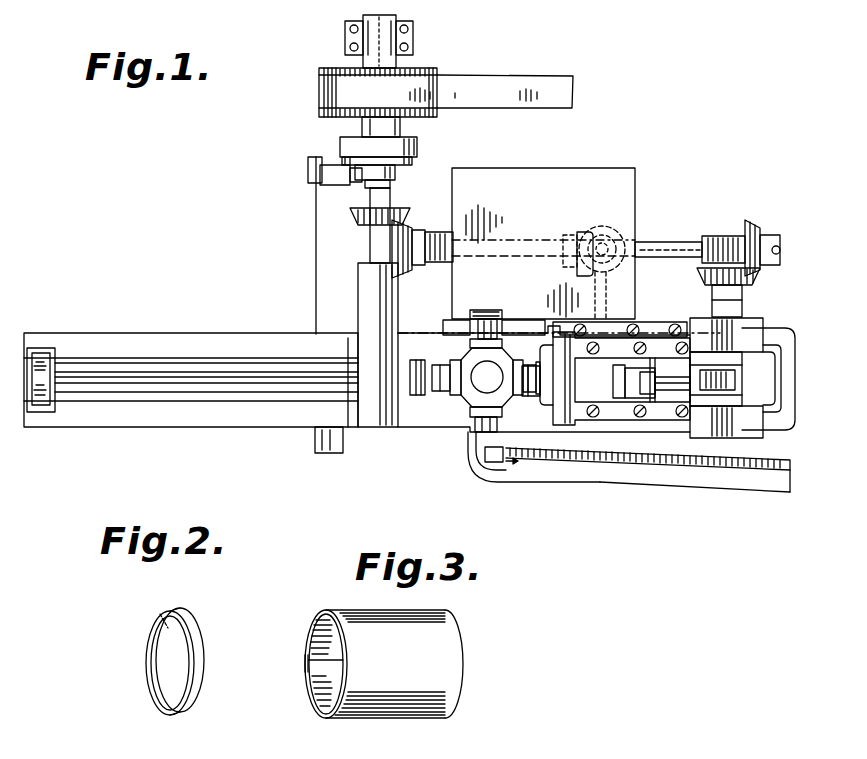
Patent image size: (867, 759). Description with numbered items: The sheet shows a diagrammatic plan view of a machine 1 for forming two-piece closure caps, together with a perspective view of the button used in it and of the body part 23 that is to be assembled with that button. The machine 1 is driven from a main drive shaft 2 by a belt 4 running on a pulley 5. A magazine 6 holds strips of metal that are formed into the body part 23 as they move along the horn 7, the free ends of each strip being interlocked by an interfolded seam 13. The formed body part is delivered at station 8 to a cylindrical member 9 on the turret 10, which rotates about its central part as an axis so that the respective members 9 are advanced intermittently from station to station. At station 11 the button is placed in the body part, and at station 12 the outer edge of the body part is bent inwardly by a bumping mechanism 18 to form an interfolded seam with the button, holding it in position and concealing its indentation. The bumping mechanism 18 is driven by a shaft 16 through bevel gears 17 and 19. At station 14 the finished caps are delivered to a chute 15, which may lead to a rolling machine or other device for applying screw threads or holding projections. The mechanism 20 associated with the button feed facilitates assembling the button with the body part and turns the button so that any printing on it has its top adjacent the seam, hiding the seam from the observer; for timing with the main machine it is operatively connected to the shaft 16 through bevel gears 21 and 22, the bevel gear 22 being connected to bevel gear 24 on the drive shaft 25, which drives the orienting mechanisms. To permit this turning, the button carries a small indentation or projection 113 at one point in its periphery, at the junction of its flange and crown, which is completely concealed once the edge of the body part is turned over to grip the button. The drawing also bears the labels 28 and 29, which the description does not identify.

In FIG. 1, the machine 1 is at (362, 456).
In FIG. 1, the main drive shaft 2 is at (363, 18).
In FIG. 1, the belt 4 is at (470, 77).
In FIG. 1, the pulley 5 is at (431, 68).
In FIG. 1, the magazine 6 is at (42, 346).
In FIG. 1, the horn 7 is at (231, 383).
In FIG. 1, the station 8 is at (420, 394).
In FIG. 1, the cylindrical member 9 is at (441, 392).
In FIG. 1, the turret 10 is at (500, 395).
In FIG. 1, the station 11 is at (496, 334).
In FIG. 1, the station 12 is at (562, 427).
In FIG. 3, the interfolded seam 13 is at (318, 661).
In FIG. 1, the station 14 is at (485, 432).
In FIG. 1, the chute 15 is at (660, 480).
In FIG. 1, the shaft 16 is at (656, 240).
In FIG. 1, the bevel gear 17 is at (406, 224).
In FIG. 1, the bumping mechanism 18 is at (668, 385).
In FIG. 2, the bumping mechanism 18 is at (165, 612).
In FIG. 1, the bevel gear 19 is at (740, 265).
In FIG. 1, the mechanism 20 is at (562, 167).
In FIG. 1, the bevel gear 21 is at (606, 232).
In FIG. 1, the bevel gear 22 is at (582, 232).
In FIG. 3, the body part 23 is at (418, 706).
In FIG. 1, the bevel gear 24 is at (612, 262).
In FIG. 1, the drive shaft 25 is at (606, 294).
In FIG. 2, the ring 28 is at (199, 644).
In FIG. 1, the bracket 29 is at (478, 310).
In FIG. 2, the indentation or projection 113 is at (176, 614).